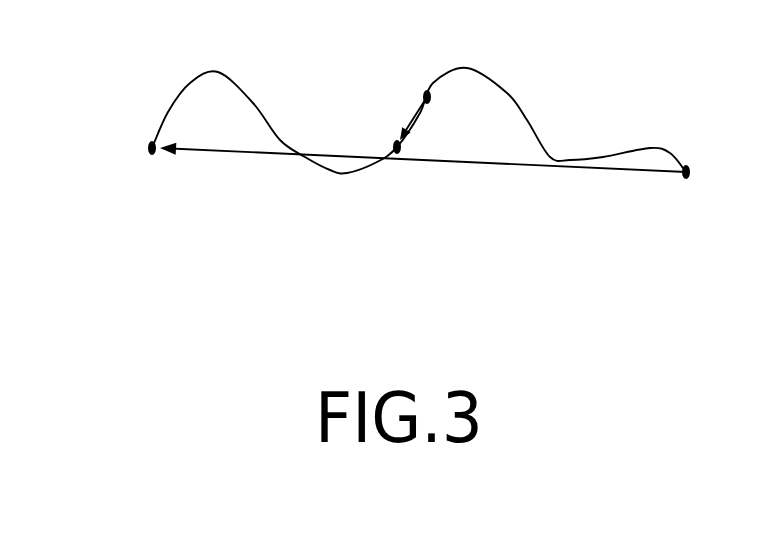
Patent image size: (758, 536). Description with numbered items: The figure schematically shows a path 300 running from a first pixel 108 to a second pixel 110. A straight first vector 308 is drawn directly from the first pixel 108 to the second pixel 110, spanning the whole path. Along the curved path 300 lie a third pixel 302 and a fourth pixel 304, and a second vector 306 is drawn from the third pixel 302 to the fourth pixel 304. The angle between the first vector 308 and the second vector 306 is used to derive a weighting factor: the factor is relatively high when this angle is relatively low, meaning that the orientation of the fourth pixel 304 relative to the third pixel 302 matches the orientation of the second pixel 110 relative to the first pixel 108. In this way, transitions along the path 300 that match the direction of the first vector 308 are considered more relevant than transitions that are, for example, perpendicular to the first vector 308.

The first pixel 108 is at (691, 166).
The second pixel 110 is at (150, 152).
The path 300 is at (268, 123).
The third pixel 302 is at (424, 90).
The fourth pixel 304 is at (391, 146).
The second vector 306 is at (418, 117).
The first vector 308 is at (460, 165).